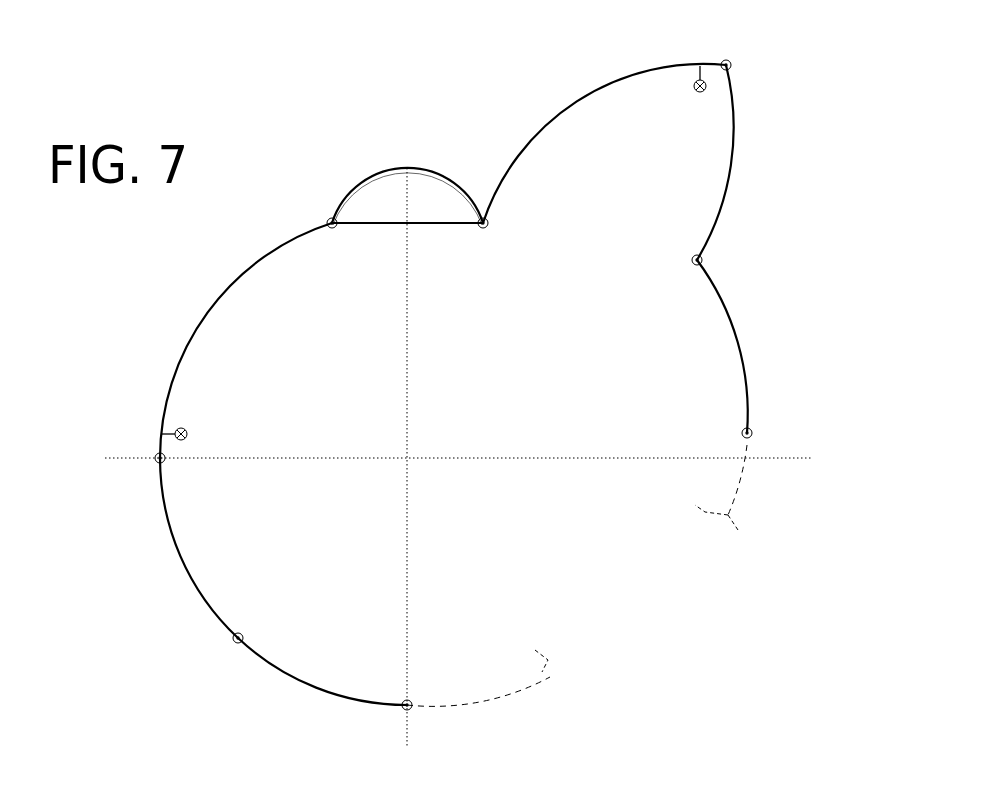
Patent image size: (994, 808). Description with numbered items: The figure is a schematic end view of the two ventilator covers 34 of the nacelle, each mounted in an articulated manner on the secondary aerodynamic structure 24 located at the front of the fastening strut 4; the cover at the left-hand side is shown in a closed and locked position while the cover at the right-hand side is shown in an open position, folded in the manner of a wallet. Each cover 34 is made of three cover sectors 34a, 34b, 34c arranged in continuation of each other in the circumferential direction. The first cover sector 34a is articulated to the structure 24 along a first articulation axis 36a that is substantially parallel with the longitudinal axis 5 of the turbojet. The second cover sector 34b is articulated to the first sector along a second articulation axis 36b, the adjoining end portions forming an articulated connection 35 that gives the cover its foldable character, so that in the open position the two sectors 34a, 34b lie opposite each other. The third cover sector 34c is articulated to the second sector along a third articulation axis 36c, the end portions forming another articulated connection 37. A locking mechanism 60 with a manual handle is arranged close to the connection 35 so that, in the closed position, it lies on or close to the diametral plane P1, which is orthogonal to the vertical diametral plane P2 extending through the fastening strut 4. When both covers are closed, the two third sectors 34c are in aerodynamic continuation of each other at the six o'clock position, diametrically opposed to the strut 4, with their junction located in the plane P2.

The fastening strut 4 is at (333, 131).
The secondary aerodynamic structure 24 is at (350, 192).
The ventilator cover 34 is at (464, 381).
The first cover sector 34a is at (253, 262).
The second cover sector 34b is at (172, 550).
The third cover sector 34c is at (292, 682).
The articulated connection 35 is at (738, 48).
The first articulation axis 36a is at (336, 230).
The second articulation axis 36b is at (155, 455).
The third articulation axis 36c is at (235, 645).
The articulated connection 37 is at (262, 624).
The locking mechanism 60 is at (699, 96).
The longitudinal axis 5 is at (407, 458).
The diametral plane P1 is at (772, 458).
The vertical diametral plane P2 is at (407, 730).